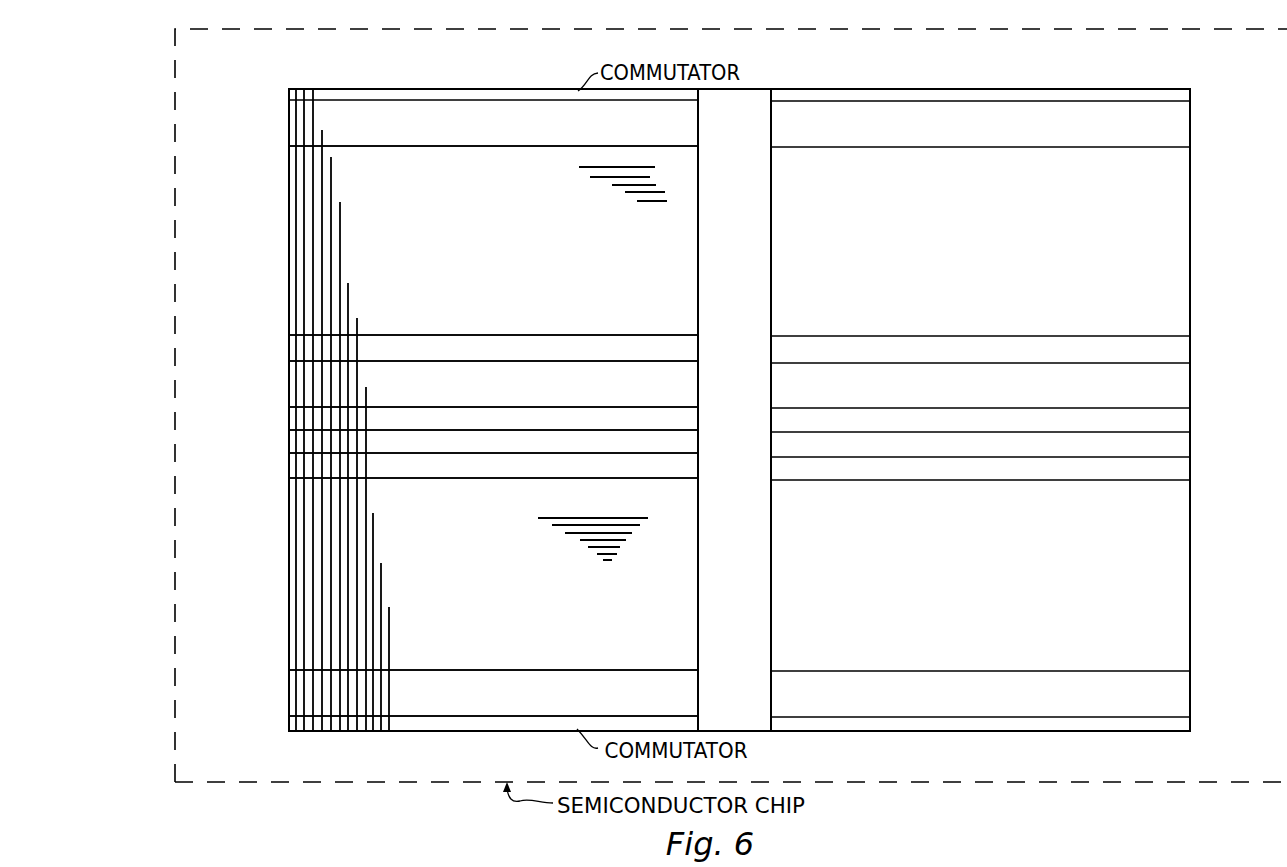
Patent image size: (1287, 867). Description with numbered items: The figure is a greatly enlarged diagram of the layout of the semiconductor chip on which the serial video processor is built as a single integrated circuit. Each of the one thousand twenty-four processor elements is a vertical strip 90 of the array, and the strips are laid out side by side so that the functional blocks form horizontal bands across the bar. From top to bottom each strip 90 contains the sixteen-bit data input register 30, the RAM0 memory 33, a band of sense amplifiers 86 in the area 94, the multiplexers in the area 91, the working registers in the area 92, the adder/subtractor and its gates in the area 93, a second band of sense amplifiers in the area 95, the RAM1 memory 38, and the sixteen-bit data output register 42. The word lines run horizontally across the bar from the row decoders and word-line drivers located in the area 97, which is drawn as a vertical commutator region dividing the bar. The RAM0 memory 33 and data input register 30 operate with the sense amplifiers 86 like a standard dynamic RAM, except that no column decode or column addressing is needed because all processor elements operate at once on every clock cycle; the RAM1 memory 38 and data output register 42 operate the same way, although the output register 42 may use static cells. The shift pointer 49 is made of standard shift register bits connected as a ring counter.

The data input register 30 is at (289, 121).
The RAM0 memory 33 is at (289, 225).
The RAM1 memory 38 is at (289, 563).
The data output register 42 is at (289, 696).
The shift pointer 49 is at (289, 722).
The sense amplifiers 86 is at (662, 202).
The vertical strip 90 is at (291, 89).
The multiplexer area 91 is at (289, 383).
The register area 92 is at (289, 418).
The adder/subtractor area 93 is at (289, 440).
The sense amplifier area 94 is at (289, 350).
The sense amplifier area 95 is at (289, 462).
The row decoder and word-line driver area 97 is at (753, 94).